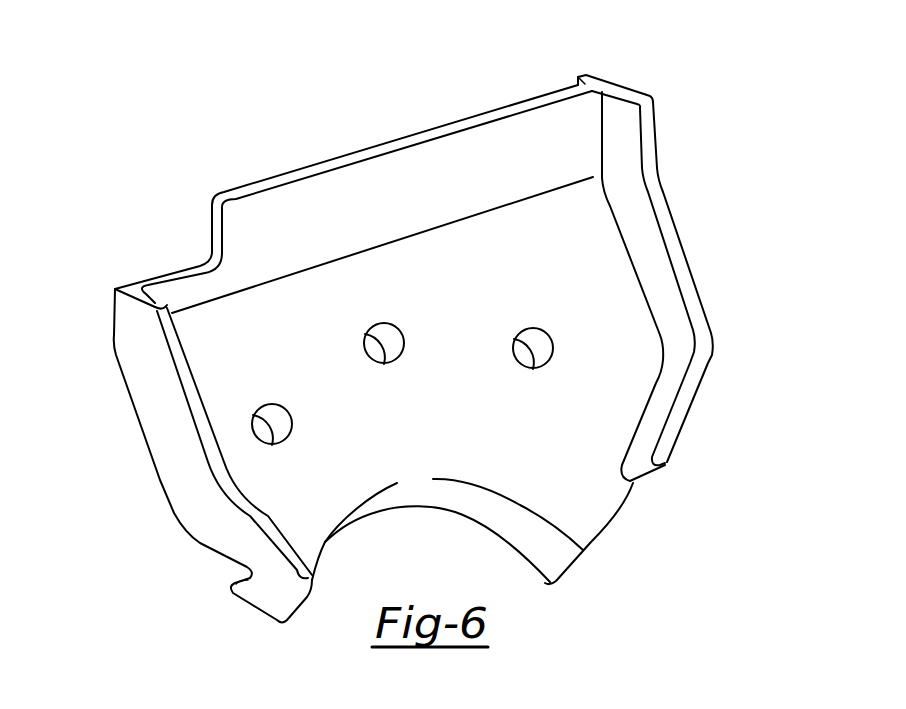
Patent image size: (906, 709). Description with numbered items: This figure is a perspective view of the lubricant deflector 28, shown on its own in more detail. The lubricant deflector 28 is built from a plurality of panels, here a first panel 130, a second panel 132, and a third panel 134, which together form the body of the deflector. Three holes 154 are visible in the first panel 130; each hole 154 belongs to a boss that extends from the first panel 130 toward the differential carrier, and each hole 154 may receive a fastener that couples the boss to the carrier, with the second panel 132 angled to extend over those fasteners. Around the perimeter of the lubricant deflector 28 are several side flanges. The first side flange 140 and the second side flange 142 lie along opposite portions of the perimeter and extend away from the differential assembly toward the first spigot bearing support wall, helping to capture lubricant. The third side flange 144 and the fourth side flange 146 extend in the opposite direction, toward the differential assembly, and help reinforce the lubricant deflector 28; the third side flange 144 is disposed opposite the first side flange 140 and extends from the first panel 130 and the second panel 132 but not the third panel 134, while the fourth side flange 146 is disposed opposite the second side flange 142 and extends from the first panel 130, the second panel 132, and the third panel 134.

The lubricant deflector 28 is at (183, 152).
The first panel 130 is at (595, 305).
The second panel 132 is at (436, 160).
The third panel 134 is at (497, 523).
The first side flange 140 is at (578, 77).
The second side flange 142 is at (135, 427).
The third side flange 144 is at (668, 203).
The fourth side flange 146 is at (200, 390).
The hole 154 is at (365, 345).